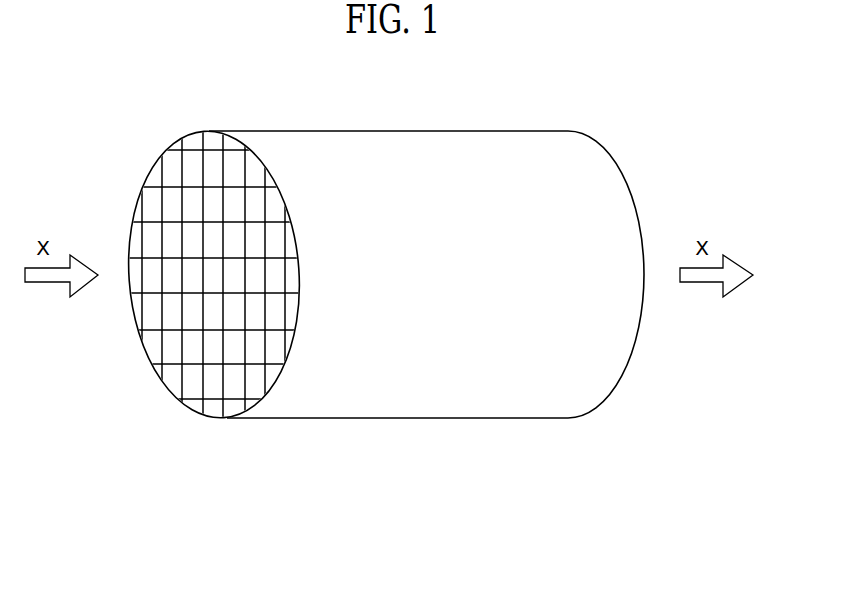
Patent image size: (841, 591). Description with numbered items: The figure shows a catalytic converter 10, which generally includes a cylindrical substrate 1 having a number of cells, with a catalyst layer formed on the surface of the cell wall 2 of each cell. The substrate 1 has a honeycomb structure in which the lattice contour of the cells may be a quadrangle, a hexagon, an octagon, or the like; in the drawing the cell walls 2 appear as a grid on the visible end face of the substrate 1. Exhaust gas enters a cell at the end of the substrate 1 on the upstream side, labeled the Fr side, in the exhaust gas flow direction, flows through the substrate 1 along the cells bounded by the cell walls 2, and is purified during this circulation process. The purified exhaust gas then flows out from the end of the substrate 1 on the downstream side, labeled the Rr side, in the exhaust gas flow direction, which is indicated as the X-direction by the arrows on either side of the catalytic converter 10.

The substrate 1 is at (421, 146).
The cell wall 2 is at (185, 376).
The catalytic converter 10 is at (371, 311).